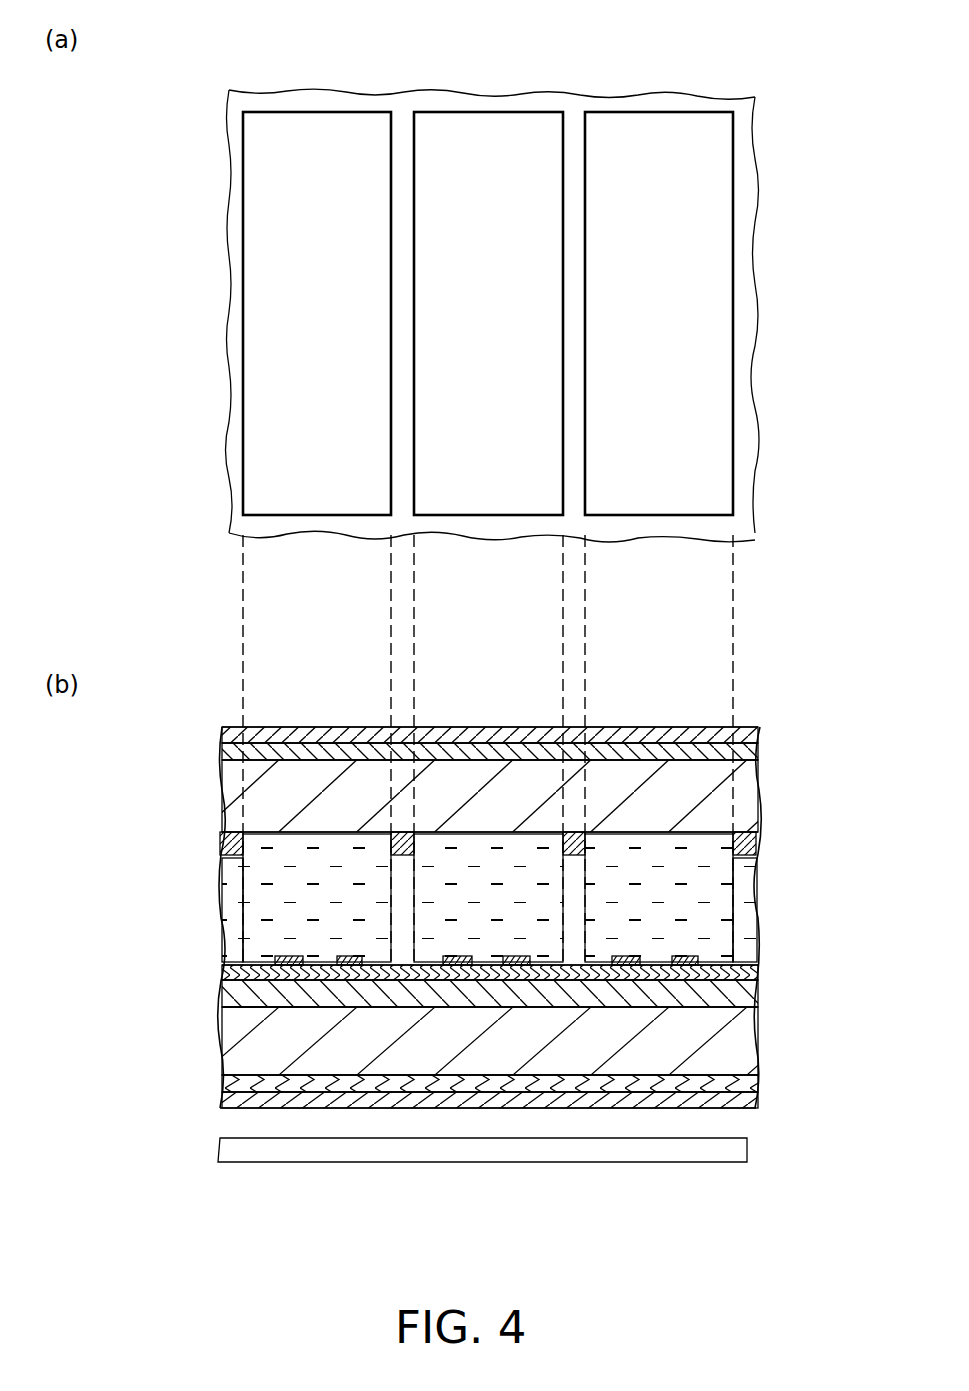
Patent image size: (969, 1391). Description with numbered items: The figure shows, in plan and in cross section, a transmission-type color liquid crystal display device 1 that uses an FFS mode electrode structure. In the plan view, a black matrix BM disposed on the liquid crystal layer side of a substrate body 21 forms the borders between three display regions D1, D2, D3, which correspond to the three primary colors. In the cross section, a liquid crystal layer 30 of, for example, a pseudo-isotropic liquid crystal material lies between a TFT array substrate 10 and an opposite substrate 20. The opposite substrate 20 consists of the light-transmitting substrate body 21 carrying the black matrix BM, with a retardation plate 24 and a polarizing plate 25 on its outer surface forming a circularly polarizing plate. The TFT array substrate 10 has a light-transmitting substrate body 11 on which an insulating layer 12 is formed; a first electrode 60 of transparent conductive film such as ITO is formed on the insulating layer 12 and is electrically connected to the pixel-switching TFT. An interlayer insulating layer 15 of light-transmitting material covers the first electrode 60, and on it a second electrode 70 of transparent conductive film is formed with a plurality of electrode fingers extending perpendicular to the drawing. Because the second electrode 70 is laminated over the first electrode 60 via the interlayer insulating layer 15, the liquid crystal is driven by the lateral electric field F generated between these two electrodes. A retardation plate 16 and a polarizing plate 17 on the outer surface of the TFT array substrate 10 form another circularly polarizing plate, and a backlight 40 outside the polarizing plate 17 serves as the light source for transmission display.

In FIG. 4A, the liquid crystal display device 1 is at (745, 68).
In FIG. 4B, the liquid crystal display device 1 is at (773, 678).
In FIG. 4A, the black matrix BM is at (750, 273).
In FIG. 4B, the black matrix BM is at (222, 842).
In FIG. 4A, the display region D1 is at (731, 568).
In FIG. 4A, the display region D2 is at (561, 568).
In FIG. 4A, the display region D3 is at (389, 568).
In FIG. 4B, the opposite substrate 20 is at (137, 722).
In FIG. 4B, the polarizing plate 25 is at (735, 742).
In FIG. 4B, the retardation plate 24 is at (732, 753).
In FIG. 4B, the substrate body 21 is at (722, 798).
In FIG. 4B, the liquid crystal layer 30 is at (722, 908).
In FIG. 4B, the lateral electric field F is at (630, 924).
In FIG. 4B, the TFT array substrate 10 is at (137, 935).
In FIG. 4B, the second electrode 70 is at (272, 958).
In FIG. 4B, the interlayer insulating layer 15 is at (730, 968).
In FIG. 4B, the first electrode 60 is at (722, 985).
In FIG. 4B, the insulating layer 12 is at (226, 1006).
In FIG. 4B, the substrate body 11 is at (722, 1040).
In FIG. 4B, the retardation plate 16 is at (722, 1082).
In FIG. 4B, the polarizing plate 17 is at (735, 1100).
In FIG. 4B, the backlight 40 is at (722, 1152).